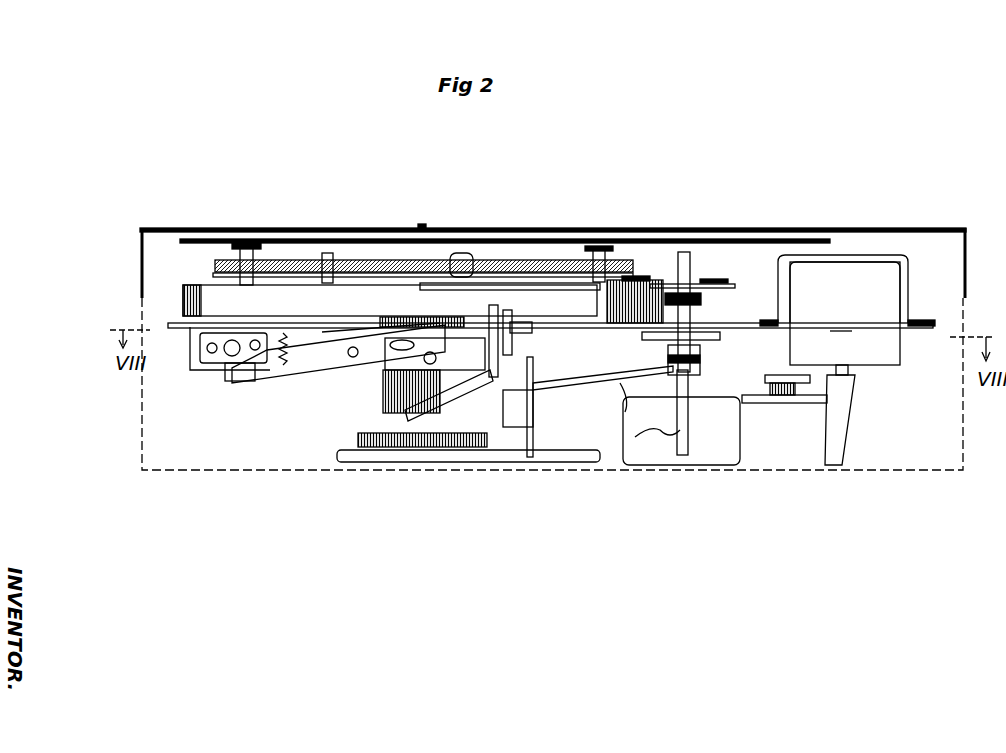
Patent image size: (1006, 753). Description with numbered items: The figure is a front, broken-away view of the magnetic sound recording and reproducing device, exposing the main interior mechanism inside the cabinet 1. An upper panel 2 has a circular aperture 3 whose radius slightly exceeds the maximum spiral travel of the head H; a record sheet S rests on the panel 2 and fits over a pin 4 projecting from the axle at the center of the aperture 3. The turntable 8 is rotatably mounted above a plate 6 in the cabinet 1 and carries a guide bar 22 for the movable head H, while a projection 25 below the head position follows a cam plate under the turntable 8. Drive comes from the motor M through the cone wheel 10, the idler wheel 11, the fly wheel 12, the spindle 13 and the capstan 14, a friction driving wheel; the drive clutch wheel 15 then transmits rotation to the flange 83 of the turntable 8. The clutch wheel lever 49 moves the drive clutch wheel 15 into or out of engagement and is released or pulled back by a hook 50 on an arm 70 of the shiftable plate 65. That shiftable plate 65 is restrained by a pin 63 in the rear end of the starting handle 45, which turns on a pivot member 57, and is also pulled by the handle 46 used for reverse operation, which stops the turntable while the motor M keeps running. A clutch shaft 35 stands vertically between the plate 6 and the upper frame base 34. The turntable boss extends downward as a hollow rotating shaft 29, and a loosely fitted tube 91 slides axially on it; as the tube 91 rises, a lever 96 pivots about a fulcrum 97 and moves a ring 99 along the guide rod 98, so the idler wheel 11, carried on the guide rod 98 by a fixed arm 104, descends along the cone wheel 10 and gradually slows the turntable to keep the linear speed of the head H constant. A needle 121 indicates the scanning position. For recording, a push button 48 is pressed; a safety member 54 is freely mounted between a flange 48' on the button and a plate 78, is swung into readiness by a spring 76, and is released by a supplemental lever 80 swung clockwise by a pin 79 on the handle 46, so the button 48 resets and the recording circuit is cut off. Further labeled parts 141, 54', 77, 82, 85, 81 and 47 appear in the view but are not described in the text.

The cabinet 1 is at (142, 420).
The upper panel 2 is at (162, 228).
The circular aperture 3 is at (256, 243).
The record sheet S is at (317, 228).
The projection 25 is at (356, 282).
The pin 4 is at (423, 228).
The head H is at (498, 230).
The guide bar 22 is at (576, 262).
The needle 121 is at (761, 238).
The turntable 8 is at (199, 285).
The flange 83 is at (158, 299).
The capstan 14 is at (697, 300).
The plate arm 141 is at (712, 288).
The clutch wheel lever 49 is at (723, 279).
The flange 48' is at (210, 348).
The push button 48 is at (221, 372).
The plate 78 is at (190, 357).
The lever end 54' is at (233, 388).
The spring 76 is at (287, 365).
The safety member 54 is at (338, 368).
The pivot 77 is at (353, 360).
The clutch shaft 35 is at (330, 332).
The rack 82 is at (382, 345).
The slot 85 is at (402, 340).
The slide block 81 is at (440, 338).
The supplemental lever 80 is at (424, 364).
The loosely fitted tube 91 is at (392, 410).
The hollow rotating shaft 29 is at (400, 447).
The hook 50 is at (367, 462).
The arm 47 is at (440, 430).
The fulcrum 97 is at (520, 412).
The plate 6 is at (531, 458).
The starting handle 45 is at (538, 404).
The handle 46 is at (488, 318).
The pin 79 is at (496, 320).
The shiftable plate 65 is at (516, 324).
The arm 70 is at (546, 328).
The pin 63 is at (602, 332).
The pivot member 57 is at (620, 386).
The lever 96 is at (630, 386).
The drive clutch wheel 15 is at (649, 283).
The spindle 13 is at (660, 346).
The ring 99 is at (702, 362).
The upper frame base 34 is at (752, 326).
The fly wheel 12 is at (738, 462).
The guide rod 98 is at (690, 440).
The fixed arm 104 is at (770, 396).
The idler wheel 11 is at (790, 403).
The motor M is at (847, 310).
The cone wheel 10 is at (853, 413).